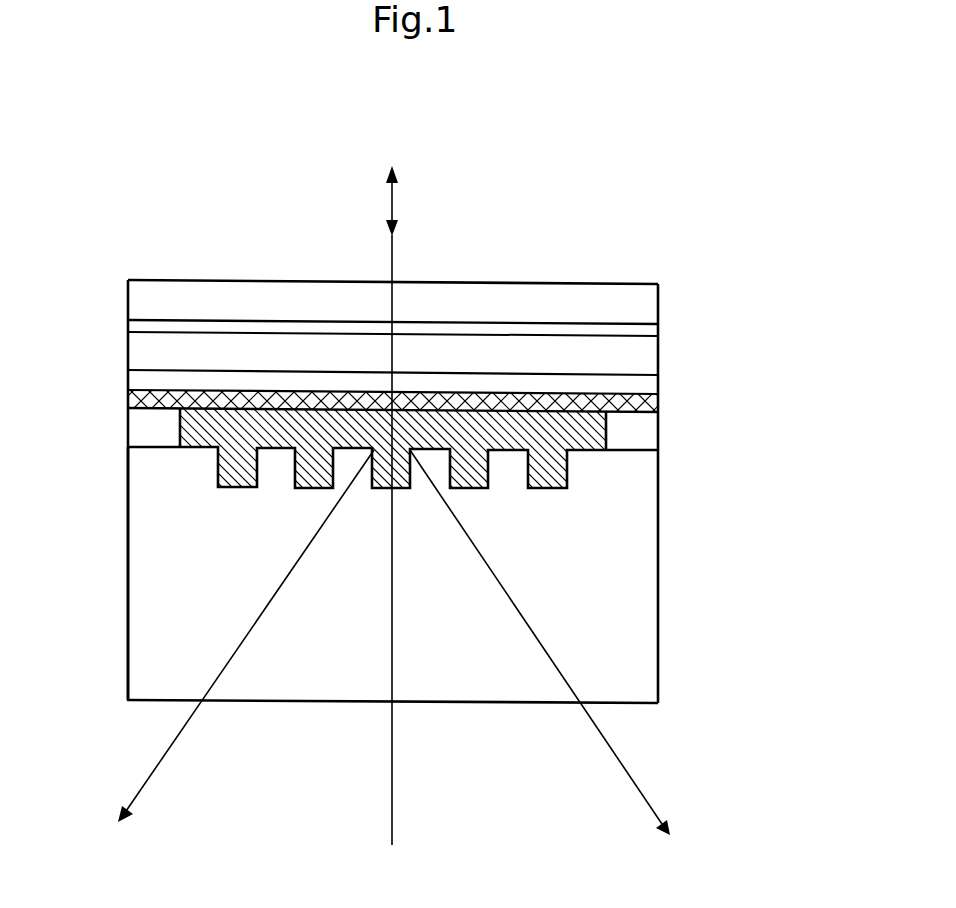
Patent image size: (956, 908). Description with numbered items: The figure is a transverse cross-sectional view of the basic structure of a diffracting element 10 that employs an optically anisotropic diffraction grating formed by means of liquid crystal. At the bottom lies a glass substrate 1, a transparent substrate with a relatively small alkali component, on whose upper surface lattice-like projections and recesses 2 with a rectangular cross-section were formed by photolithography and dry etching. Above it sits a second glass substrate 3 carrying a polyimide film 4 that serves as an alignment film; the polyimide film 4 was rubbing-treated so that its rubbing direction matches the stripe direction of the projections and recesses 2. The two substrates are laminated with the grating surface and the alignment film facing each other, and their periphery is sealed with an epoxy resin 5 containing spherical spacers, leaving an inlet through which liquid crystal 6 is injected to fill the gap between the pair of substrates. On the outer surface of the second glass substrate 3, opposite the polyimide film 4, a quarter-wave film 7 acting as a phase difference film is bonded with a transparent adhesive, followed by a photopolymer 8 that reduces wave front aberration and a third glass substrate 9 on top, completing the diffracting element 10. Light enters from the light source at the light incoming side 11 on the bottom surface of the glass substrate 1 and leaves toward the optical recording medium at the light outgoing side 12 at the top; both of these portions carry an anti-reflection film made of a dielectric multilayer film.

The glass substrate 1 is at (585, 597).
The projections and recesses 2 is at (568, 482).
The second glass substrate 3 is at (585, 387).
The polyimide film 4 is at (242, 395).
The epoxy resin 5 is at (630, 437).
The liquid crystal 6 is at (565, 432).
The quarter-wave film 7 is at (625, 355).
The photopolymer 8 is at (575, 327).
The third glass substrate 9 is at (530, 302).
The diffracting element 10 is at (125, 327).
The light incoming side 11 is at (420, 710).
The light outgoing side 12 is at (450, 277).